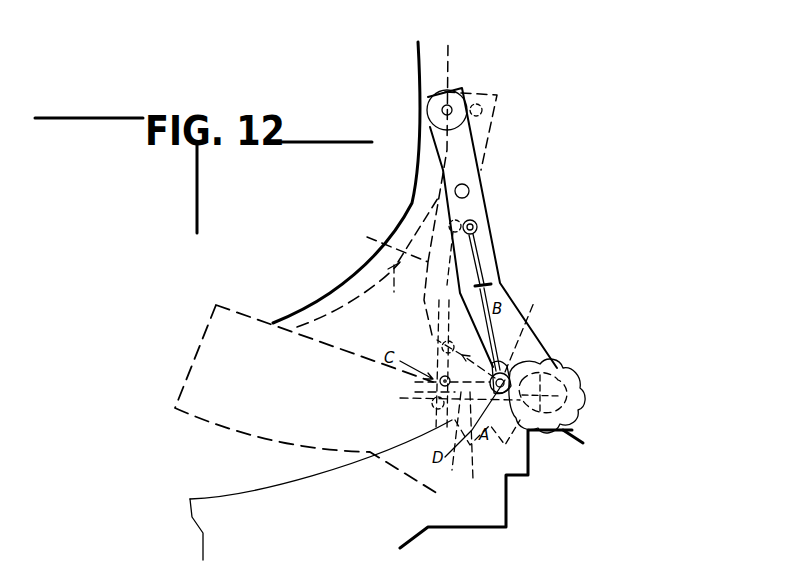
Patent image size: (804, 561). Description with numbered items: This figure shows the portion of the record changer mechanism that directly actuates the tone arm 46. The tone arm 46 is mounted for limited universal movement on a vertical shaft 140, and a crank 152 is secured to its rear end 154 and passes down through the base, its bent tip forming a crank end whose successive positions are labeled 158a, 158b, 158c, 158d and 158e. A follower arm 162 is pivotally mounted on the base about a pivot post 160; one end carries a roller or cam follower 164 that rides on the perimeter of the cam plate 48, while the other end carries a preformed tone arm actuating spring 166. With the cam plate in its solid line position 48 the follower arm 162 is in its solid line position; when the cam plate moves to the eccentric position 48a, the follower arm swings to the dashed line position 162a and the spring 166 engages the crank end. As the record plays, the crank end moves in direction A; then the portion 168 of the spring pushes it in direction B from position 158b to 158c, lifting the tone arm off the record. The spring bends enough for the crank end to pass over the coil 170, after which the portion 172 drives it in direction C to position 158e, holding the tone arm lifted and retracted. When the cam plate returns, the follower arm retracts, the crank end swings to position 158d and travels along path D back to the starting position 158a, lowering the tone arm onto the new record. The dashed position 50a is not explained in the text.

The tone arm 46 is at (342, 479).
The cam plate 48 is at (332, 282).
The cam plate (eccentric position) 48a is at (358, 316).
The cover edge 50a is at (384, 289).
The vertical shaft 140 is at (538, 438).
The crank 152 is at (583, 387).
The rear end of the tone arm 154 is at (583, 405).
The crank end starting position 158a is at (478, 444).
The crank end position b 158b is at (500, 370).
The crank end position c 158c is at (433, 343).
The crank end position d 158d is at (400, 398).
The crank end retracted position 158e is at (445, 457).
The pivot post 160 is at (470, 187).
The follower arm 162 is at (490, 209).
The follower arm (dashed line position) 162a is at (377, 235).
The cam follower 164 is at (427, 110).
The tone arm actuating spring 166 is at (488, 279).
The spring portion 168 is at (505, 377).
The coil of the spring 170 is at (503, 373).
The spring portion 172 is at (493, 446).